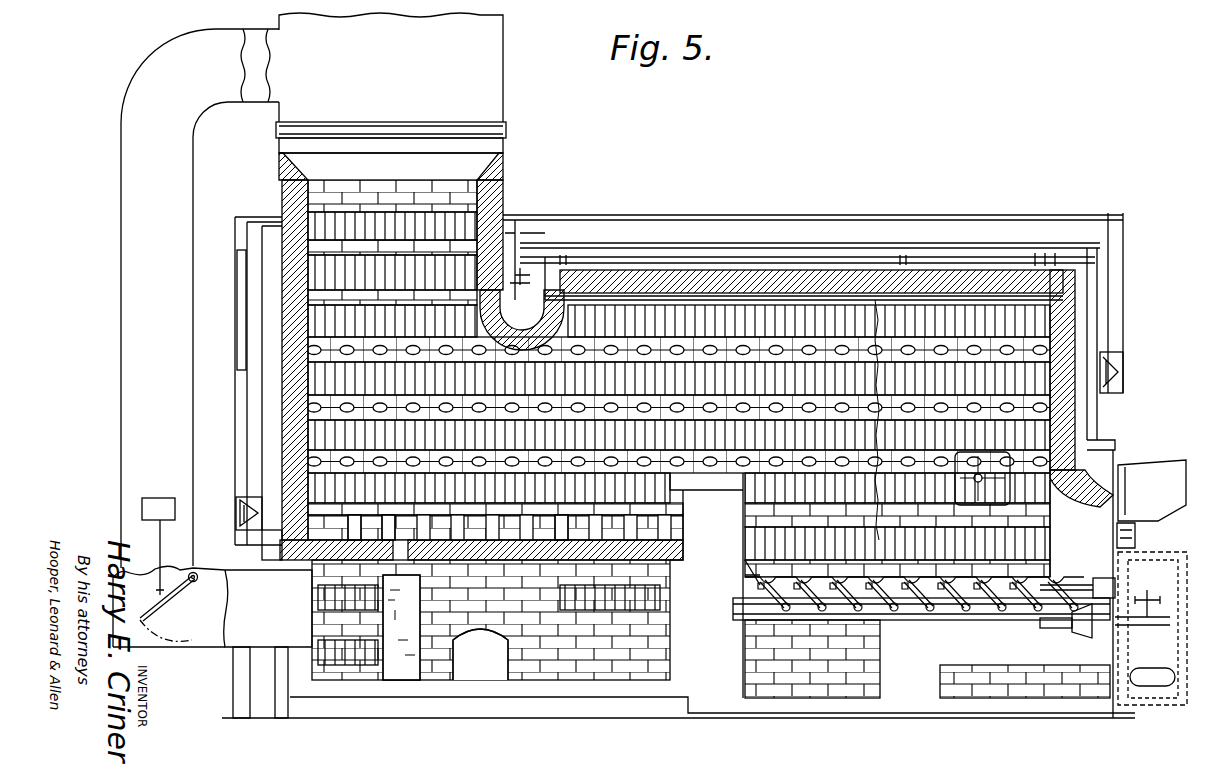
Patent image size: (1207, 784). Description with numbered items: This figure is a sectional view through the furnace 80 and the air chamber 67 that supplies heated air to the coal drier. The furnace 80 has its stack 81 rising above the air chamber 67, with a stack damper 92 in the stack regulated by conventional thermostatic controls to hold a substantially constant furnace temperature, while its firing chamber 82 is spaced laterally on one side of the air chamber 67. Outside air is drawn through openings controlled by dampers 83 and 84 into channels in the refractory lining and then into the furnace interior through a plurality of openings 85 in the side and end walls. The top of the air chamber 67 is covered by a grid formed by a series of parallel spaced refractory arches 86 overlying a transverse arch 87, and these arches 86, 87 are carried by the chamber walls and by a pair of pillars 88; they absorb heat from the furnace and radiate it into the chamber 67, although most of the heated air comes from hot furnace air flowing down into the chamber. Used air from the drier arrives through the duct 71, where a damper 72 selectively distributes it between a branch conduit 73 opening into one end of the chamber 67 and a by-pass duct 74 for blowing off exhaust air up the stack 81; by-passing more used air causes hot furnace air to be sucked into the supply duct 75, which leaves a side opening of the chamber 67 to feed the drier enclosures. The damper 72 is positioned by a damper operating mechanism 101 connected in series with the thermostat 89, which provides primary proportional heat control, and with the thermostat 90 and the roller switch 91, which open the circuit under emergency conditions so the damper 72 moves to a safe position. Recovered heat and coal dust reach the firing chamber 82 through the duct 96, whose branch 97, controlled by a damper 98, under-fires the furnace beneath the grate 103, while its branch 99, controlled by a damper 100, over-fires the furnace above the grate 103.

The stack 81 is at (487, 48).
The stack damper 92 is at (378, 128).
The by-pass duct 74 is at (128, 295).
The duct 71 is at (115, 572).
The damper 72 is at (160, 606).
The branch conduit 73 is at (215, 640).
The damper operating mechanism 101 is at (142, 508).
The thermostat 89 is at (147, 498).
The thermostat 90 is at (158, 498).
The roller switch 91 is at (172, 498).
The damper 83 is at (240, 512).
The openings 85 is at (288, 353).
The furnace 80 is at (833, 270).
The damper 84 is at (1105, 362).
The firing chamber 82 is at (740, 498).
The transverse arch 87 is at (492, 668).
The refractory arches 86 is at (345, 540).
The pillars 88 is at (386, 540).
The air chamber 67 is at (405, 633).
The duct 75 is at (487, 672).
The grate 103 is at (1008, 580).
The branch 99 is at (1128, 546).
The damper 100 is at (1150, 553).
The duct 96 is at (1175, 705).
The branch 97 is at (1120, 660).
The damper 98 is at (1152, 684).